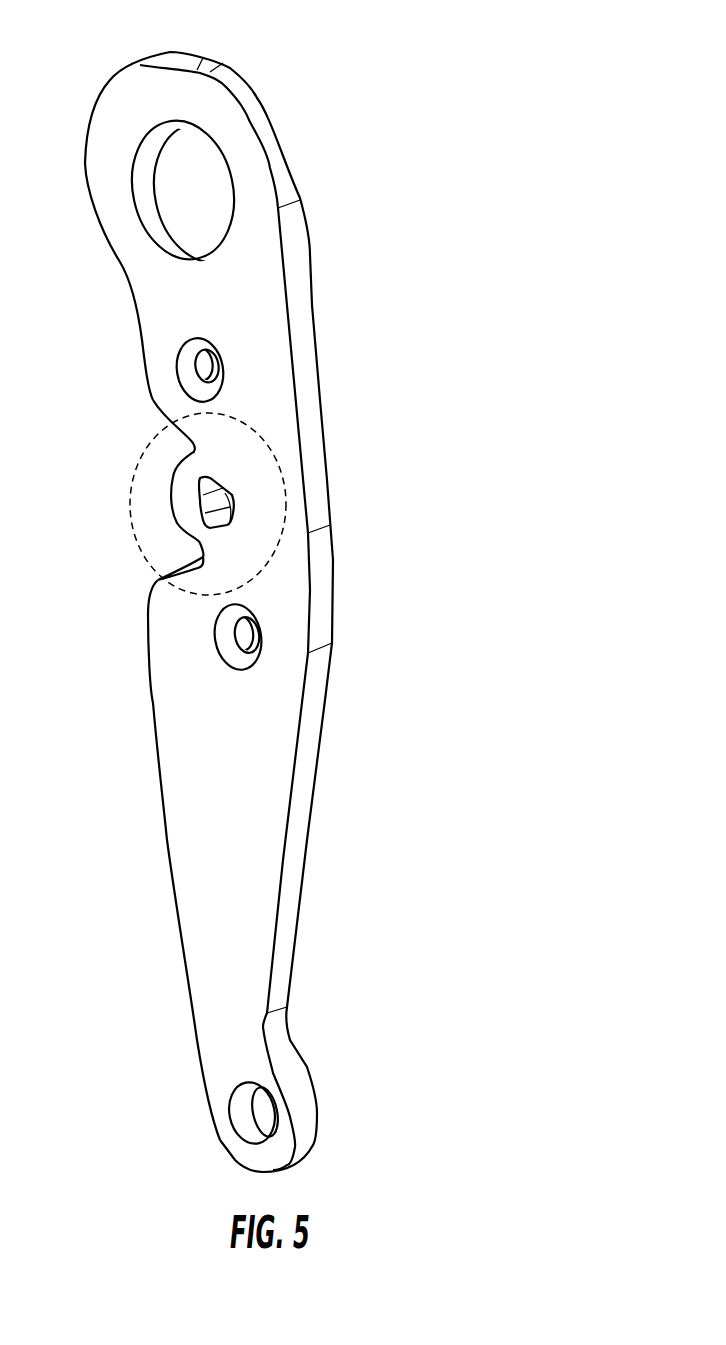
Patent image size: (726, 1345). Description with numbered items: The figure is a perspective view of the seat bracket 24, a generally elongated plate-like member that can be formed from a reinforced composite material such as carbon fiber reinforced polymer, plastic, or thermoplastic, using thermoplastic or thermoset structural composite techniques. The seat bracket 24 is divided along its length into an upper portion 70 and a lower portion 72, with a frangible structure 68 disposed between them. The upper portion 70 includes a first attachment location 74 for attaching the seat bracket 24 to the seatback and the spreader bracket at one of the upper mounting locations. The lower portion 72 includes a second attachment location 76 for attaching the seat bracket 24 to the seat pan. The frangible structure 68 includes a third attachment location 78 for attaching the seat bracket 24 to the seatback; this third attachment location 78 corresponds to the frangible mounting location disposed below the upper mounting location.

The seat bracket 24 is at (358, 61).
The frangible structure 68 is at (132, 493).
The upper portion 70 is at (57, 112).
The lower portion 72 is at (128, 592).
The first attachment location 74 is at (203, 173).
The second attachment location 76 is at (258, 1117).
The third attachment location 78 is at (233, 513).